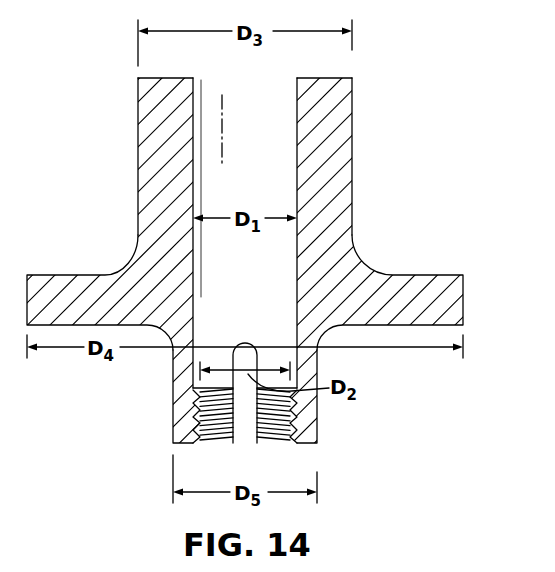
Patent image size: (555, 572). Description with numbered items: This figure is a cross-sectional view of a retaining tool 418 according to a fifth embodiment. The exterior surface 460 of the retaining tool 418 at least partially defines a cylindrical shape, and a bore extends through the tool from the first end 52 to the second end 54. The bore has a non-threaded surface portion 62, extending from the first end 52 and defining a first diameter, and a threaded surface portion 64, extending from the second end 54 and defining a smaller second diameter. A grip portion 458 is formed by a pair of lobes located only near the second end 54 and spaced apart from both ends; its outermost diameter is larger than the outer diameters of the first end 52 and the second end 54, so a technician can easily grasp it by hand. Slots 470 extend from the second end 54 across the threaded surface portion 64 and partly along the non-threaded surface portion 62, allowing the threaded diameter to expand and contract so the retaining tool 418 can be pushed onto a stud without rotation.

The retaining tool 418 is at (277, 250).
The first end 52 is at (351, 78).
The exterior surface 460 is at (352, 190).
The grip portion 458 is at (421, 275).
The second end 54 is at (303, 446).
The non-threaded surface portion 62 is at (297, 156).
The slots 470 is at (238, 430).
The threaded surface portion 64 is at (294, 408).